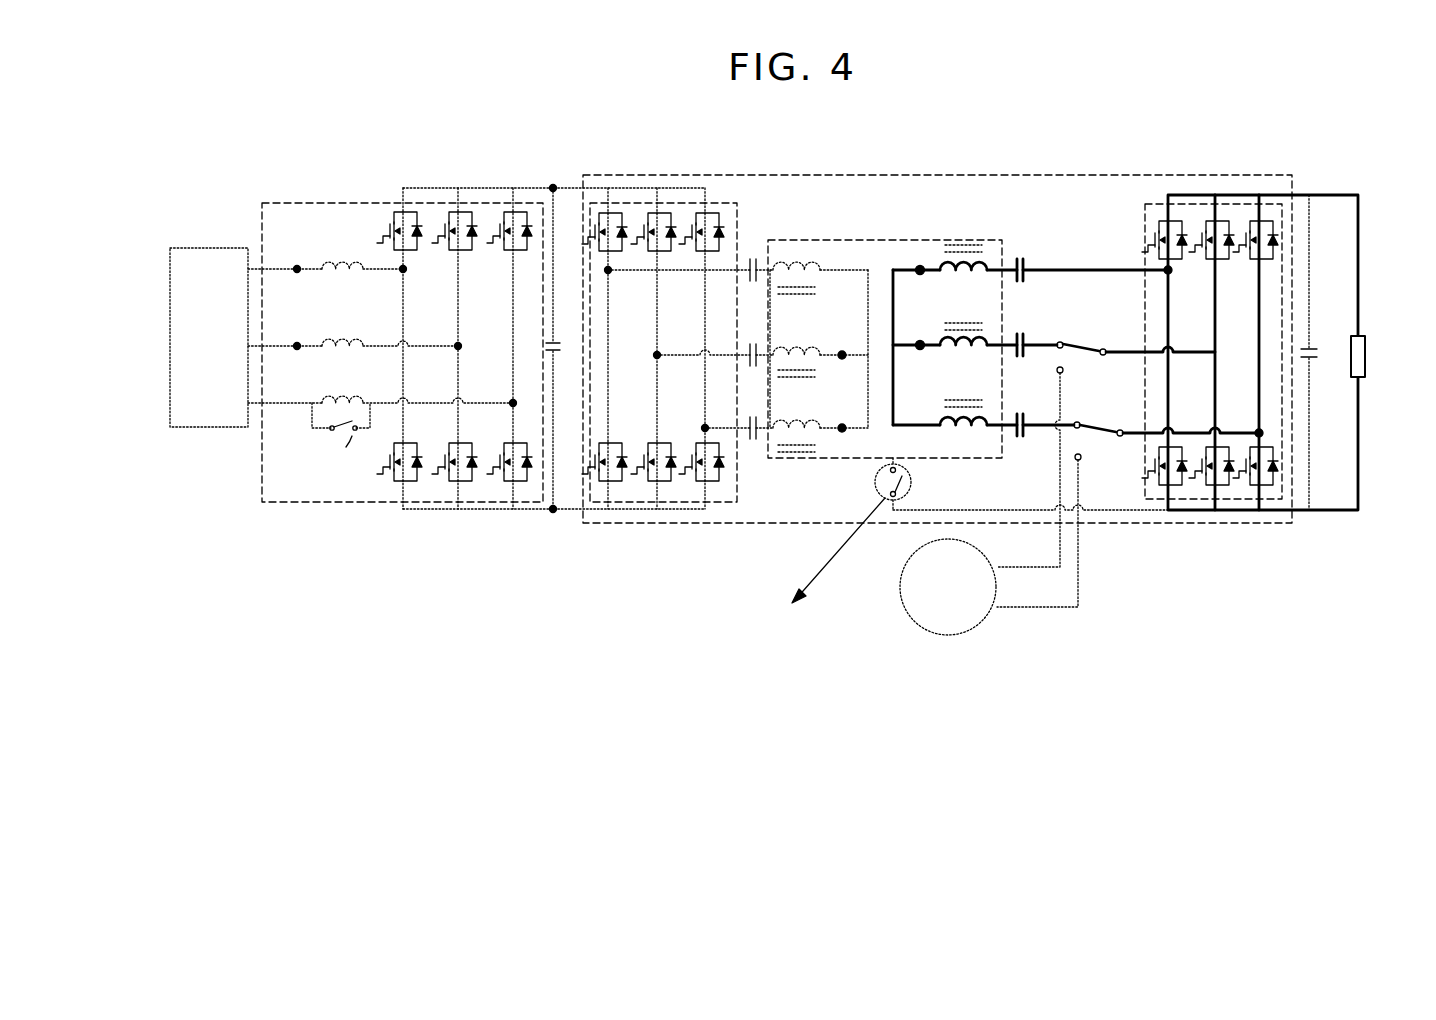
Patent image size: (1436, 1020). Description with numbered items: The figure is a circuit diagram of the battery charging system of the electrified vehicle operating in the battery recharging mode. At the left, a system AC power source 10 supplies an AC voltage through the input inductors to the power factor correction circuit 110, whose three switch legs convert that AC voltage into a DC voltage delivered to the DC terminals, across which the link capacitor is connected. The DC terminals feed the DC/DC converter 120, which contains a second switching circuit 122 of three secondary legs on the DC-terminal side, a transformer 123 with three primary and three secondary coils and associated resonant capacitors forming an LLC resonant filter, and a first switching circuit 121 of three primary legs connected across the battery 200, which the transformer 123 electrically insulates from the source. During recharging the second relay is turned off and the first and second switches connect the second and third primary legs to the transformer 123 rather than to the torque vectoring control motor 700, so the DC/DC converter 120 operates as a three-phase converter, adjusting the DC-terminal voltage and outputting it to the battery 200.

The system AC power source 10 is at (213, 428).
The power factor correction circuit 110 is at (370, 503).
The DC/DC converter 120 is at (1207, 176).
The first switching circuit 121 is at (1153, 501).
The second switching circuit 122 is at (722, 503).
The transformer 123 is at (853, 463).
The battery 200 is at (1365, 380).
The torque vectoring control motor 700 is at (950, 636).